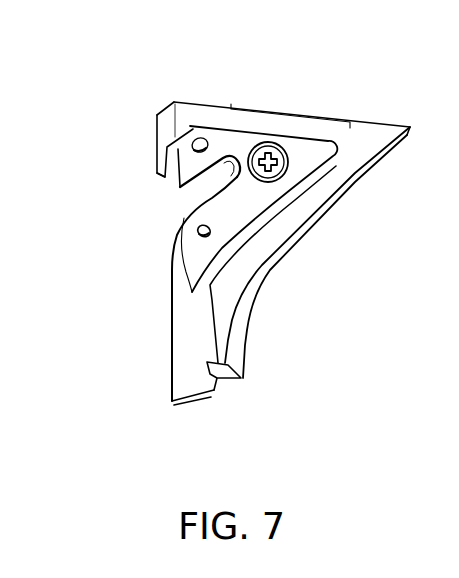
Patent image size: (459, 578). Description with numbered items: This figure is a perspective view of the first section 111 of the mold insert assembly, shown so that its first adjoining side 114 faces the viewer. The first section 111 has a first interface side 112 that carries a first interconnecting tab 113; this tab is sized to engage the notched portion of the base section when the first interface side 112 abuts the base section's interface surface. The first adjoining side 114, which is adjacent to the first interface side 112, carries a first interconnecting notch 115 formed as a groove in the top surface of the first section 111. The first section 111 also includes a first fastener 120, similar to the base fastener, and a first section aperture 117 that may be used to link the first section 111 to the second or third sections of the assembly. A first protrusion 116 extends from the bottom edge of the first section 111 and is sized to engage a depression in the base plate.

The first section 111 is at (96, 141).
The first interface side 112 is at (173, 332).
The first interconnecting tab 113 is at (166, 176).
The first adjoining side 114 is at (380, 143).
The first interconnecting notch 115 is at (296, 104).
The first protrusion 116 is at (201, 404).
The first section aperture 117 is at (203, 140).
The first fastener 120 is at (280, 177).